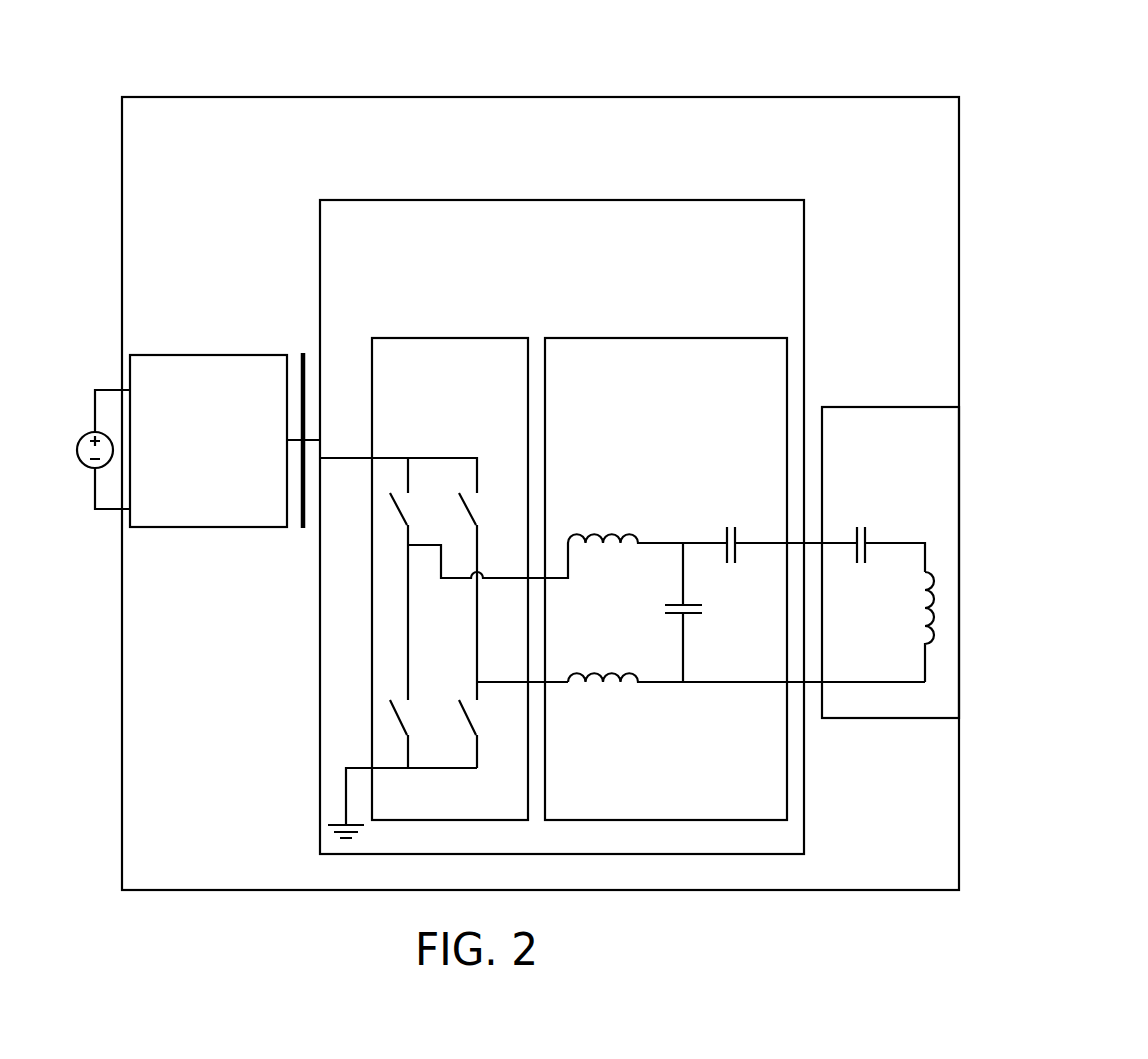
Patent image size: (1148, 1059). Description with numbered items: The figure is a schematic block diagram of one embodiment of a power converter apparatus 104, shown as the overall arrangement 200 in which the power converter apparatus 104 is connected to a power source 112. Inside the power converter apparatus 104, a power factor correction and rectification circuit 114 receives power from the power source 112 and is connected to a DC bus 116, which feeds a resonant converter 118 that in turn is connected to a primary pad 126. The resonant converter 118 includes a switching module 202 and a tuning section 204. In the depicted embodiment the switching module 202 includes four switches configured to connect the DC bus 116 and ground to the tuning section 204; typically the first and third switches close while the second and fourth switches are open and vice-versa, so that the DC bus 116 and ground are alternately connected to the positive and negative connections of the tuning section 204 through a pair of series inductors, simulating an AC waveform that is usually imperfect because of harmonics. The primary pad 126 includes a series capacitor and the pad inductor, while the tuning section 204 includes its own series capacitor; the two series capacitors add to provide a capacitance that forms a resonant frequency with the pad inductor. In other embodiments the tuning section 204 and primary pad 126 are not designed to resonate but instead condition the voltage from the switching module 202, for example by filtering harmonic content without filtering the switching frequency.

The system 200 is at (175, 40).
The power converter apparatus 104 is at (540, 493).
The resonant converter 118 is at (622, 527).
The switching module 202 is at (444, 588).
The tuning section 204 is at (735, 579).
The primary pad 126 is at (890, 562).
The power factor correction and rectification circuit 114 is at (225, 441).
The DC bus 116 is at (303, 528).
The power source 112 is at (86, 449).